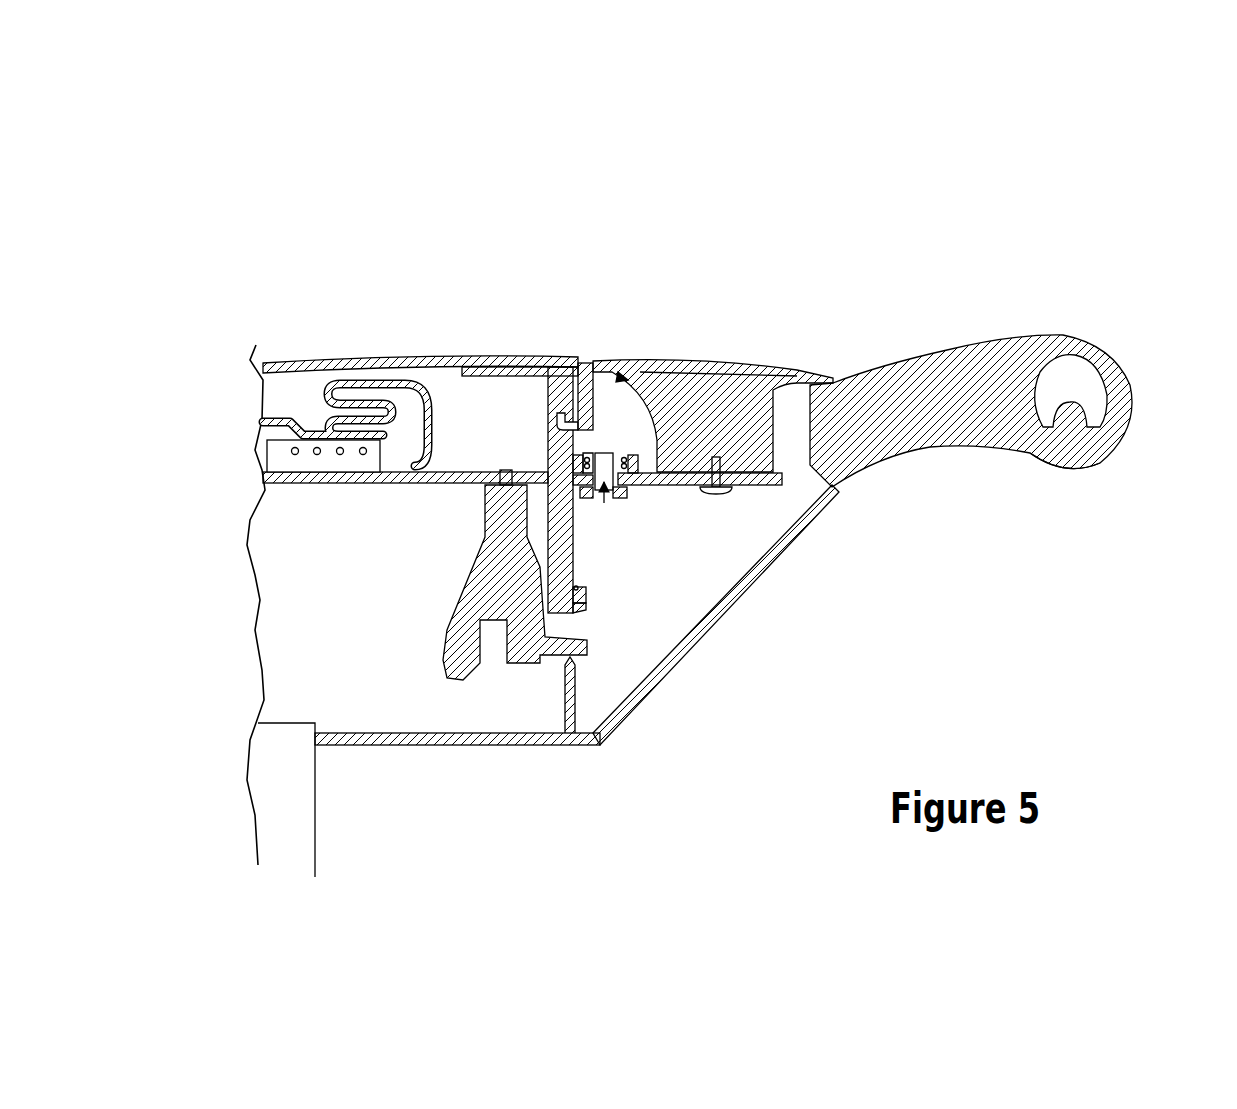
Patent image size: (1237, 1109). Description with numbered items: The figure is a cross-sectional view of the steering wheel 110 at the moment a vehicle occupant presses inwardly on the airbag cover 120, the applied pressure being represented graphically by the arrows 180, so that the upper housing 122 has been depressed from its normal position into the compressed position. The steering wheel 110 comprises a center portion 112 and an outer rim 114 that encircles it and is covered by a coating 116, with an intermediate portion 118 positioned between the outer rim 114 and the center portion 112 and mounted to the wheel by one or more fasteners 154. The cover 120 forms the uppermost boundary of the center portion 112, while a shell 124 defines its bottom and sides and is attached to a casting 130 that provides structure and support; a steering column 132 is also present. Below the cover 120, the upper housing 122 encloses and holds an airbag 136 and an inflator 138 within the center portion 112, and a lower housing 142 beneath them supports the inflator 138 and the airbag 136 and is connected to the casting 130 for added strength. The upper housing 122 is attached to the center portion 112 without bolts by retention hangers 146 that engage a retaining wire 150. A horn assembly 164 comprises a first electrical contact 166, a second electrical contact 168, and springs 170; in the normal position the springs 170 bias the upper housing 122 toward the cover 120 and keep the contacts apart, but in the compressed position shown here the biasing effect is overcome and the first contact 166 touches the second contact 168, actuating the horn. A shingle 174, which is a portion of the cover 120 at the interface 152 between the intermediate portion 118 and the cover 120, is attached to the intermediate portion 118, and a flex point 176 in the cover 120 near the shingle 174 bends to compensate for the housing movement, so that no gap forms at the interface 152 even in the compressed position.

The steering wheel 110 is at (244, 346).
The center portion 112 is at (388, 697).
The outer rim 114 is at (1078, 382).
The coating 116 is at (1043, 447).
The intermediate portion 118 is at (798, 370).
The airbag cover 120 is at (477, 358).
The upper housing 122 is at (558, 370).
The shell 124 is at (440, 737).
The casting 130 is at (462, 662).
The steering column 132 is at (300, 860).
The airbag 136 is at (322, 400).
The inflator 138 is at (265, 456).
The lower housing 142 is at (275, 485).
The retention hanger 146 is at (580, 603).
The retaining wire 150 is at (593, 457).
The interface 152 is at (668, 366).
The fastener 154 is at (717, 488).
The horn assembly 164 is at (580, 587).
The first electrical contact 166 is at (670, 483).
The second electrical contact 168 is at (640, 483).
The spring 170 is at (627, 487).
The shingle 174 is at (603, 362).
The flex point 176 is at (586, 362).
The arrows 180 is at (427, 346).